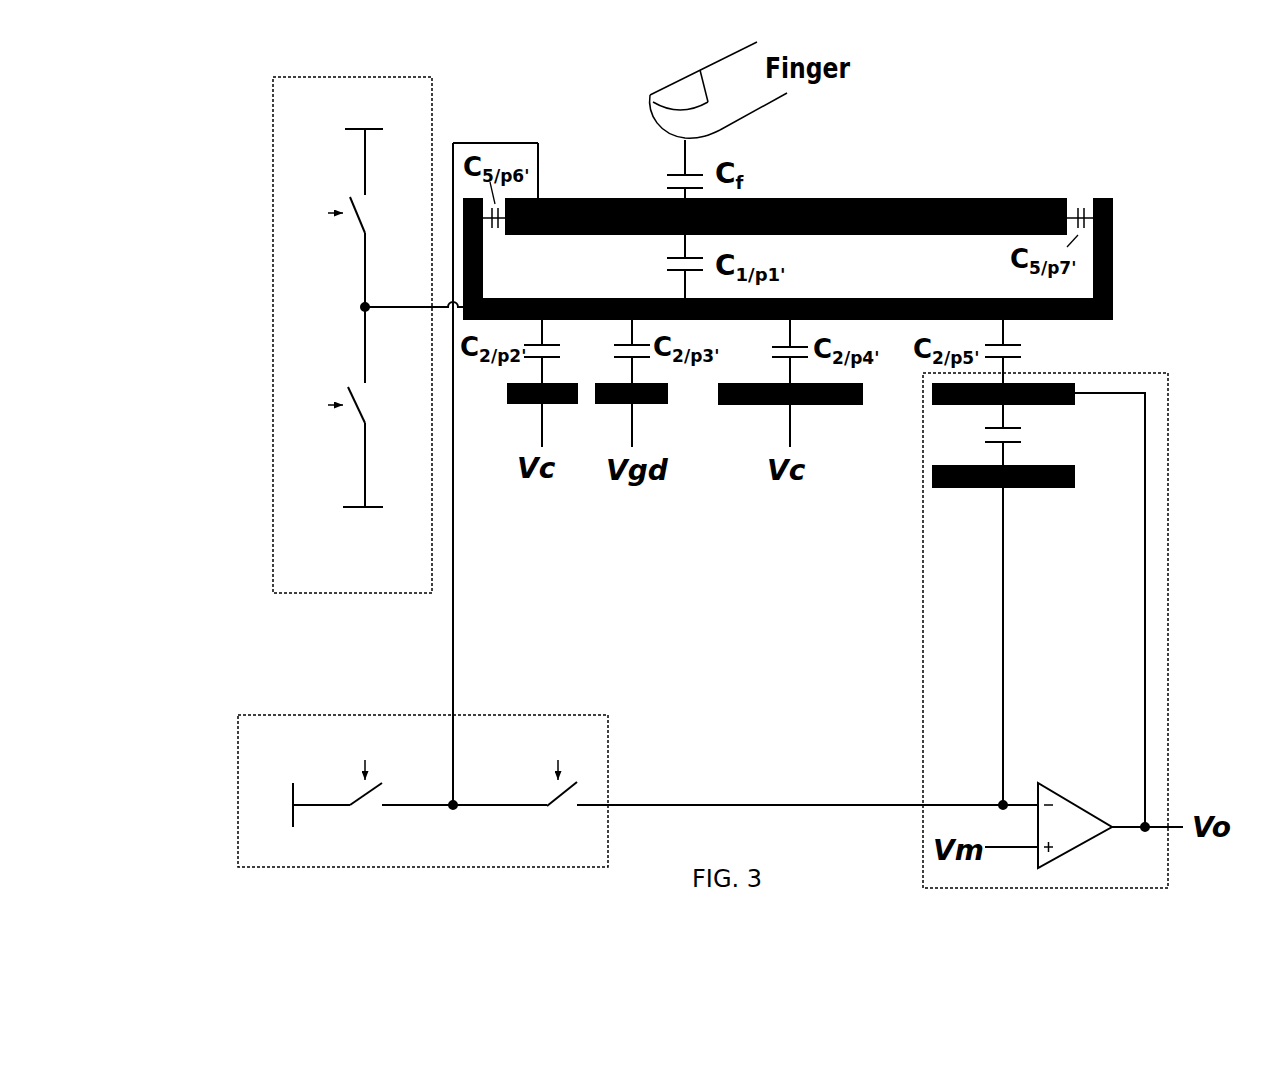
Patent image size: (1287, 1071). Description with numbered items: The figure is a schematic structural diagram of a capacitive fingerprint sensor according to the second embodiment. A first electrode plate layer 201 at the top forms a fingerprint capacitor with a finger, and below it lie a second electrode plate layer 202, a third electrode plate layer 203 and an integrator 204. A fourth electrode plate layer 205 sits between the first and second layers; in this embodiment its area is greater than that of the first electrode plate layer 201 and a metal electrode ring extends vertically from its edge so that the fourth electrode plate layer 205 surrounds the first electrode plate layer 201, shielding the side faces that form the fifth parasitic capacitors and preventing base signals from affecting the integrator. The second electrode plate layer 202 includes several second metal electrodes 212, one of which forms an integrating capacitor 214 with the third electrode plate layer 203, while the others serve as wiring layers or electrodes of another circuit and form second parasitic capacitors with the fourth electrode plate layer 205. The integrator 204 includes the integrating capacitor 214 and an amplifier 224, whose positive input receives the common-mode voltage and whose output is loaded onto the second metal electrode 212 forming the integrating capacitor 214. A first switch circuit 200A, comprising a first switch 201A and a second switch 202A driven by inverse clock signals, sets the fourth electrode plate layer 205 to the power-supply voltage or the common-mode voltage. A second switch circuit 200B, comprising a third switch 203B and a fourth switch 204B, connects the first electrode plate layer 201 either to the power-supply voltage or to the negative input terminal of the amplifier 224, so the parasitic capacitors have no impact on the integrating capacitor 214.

The first switch circuit 200A is at (268, 220).
The first switch 201A is at (350, 197).
The second switch 202A is at (348, 387).
The second switch circuit 200B is at (247, 712).
The third switch 203B is at (355, 797).
The fourth switch 204B is at (552, 797).
The first electrode plate layer 201 is at (1055, 195).
The fourth electrode plate layer 205 is at (1113, 283).
The second electrode plate layer 202 is at (1083, 377).
The second metal electrode 212 is at (547, 405).
The integrating capacitor 214 is at (1025, 437).
The third electrode plate layer 203 is at (1077, 486).
The integrator 204 is at (1169, 553).
The amplifier 224 is at (1057, 788).